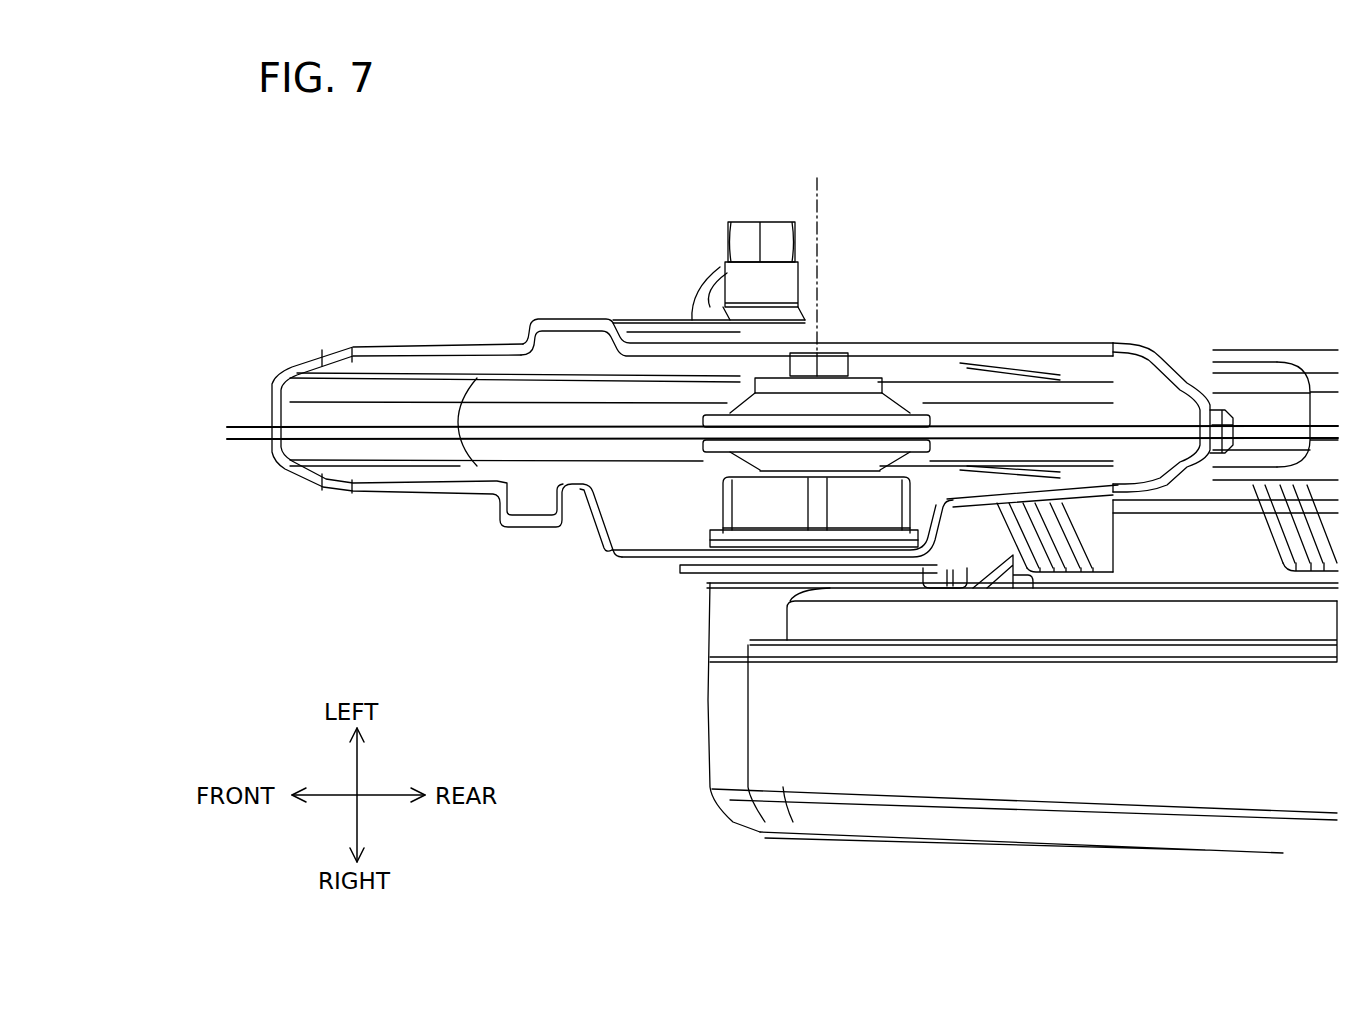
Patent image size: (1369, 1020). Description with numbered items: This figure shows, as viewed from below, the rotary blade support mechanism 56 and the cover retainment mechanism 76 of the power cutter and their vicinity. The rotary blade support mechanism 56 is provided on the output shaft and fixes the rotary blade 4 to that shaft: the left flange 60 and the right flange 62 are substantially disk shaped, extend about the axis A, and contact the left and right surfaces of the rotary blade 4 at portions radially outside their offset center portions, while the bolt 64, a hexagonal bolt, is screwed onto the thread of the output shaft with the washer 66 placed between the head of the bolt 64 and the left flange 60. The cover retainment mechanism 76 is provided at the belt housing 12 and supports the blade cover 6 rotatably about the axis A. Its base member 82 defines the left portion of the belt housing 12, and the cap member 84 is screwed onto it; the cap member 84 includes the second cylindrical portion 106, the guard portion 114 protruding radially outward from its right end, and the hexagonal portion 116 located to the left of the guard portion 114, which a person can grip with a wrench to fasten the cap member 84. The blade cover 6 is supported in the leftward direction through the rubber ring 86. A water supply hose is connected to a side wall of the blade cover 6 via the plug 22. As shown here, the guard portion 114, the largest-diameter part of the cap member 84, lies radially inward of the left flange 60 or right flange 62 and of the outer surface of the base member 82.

The rotary blade 4 is at (1038, 423).
The blade cover 6 is at (1133, 345).
The plug 22 is at (727, 243).
The axis A is at (822, 192).
The rotary blade support mechanism 56 is at (869, 337).
The bolt 64 is at (828, 352).
The washer 66 is at (864, 395).
The left flange 60 is at (926, 412).
The right flange 62 is at (992, 402).
The cap member 84 is at (727, 501).
The second cylindrical portion 106 is at (727, 512).
The hexagonal portion 116 is at (726, 524).
The guard portion 114 is at (718, 538).
The cover retainment mechanism 76 is at (698, 546).
The rubber ring 86 is at (683, 582).
The base member 82 is at (705, 640).
The belt housing 12 is at (707, 782).